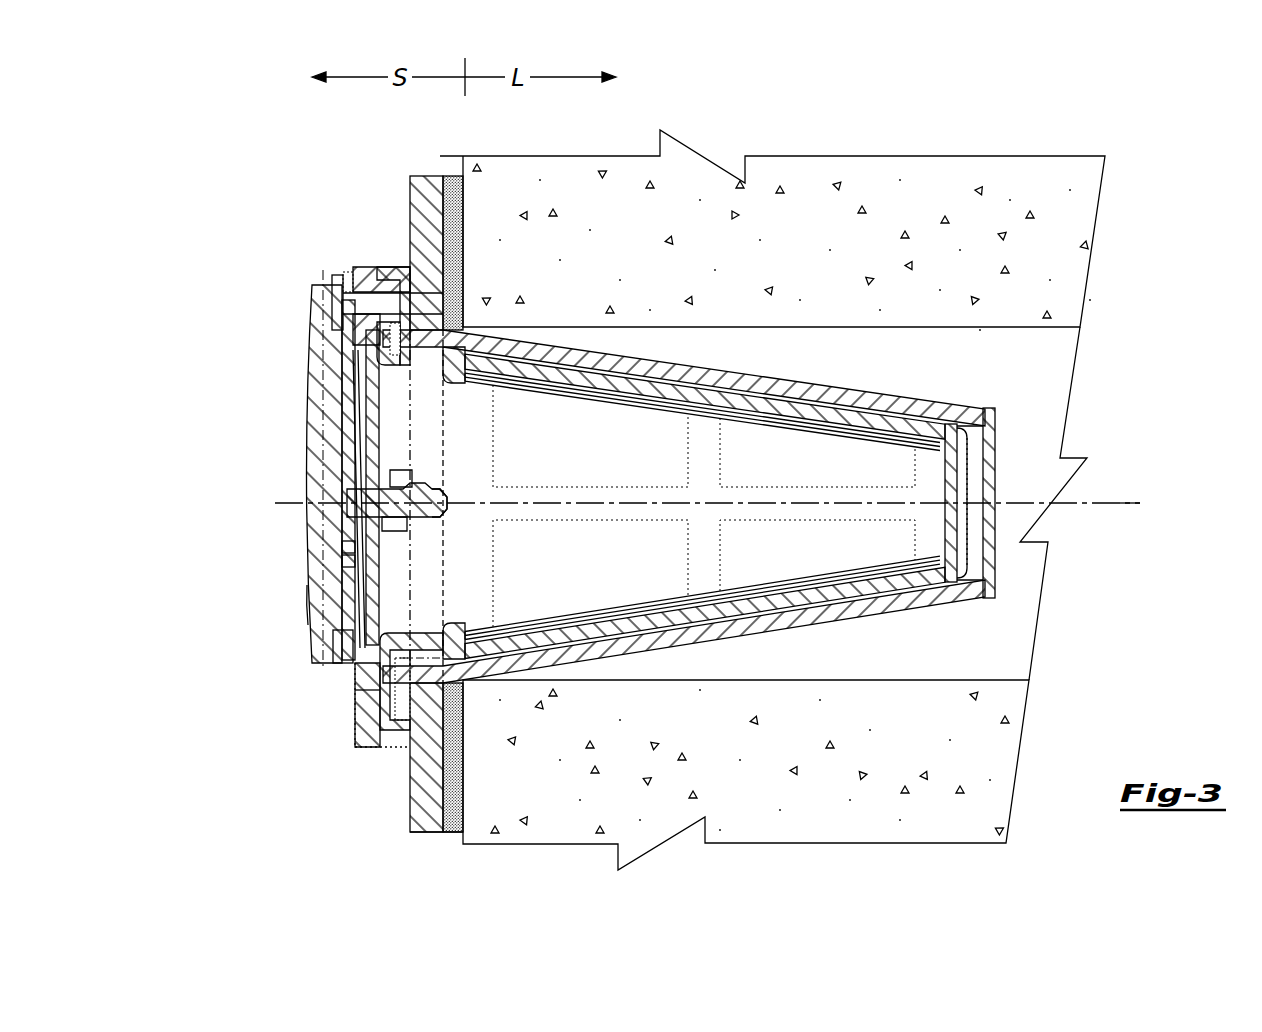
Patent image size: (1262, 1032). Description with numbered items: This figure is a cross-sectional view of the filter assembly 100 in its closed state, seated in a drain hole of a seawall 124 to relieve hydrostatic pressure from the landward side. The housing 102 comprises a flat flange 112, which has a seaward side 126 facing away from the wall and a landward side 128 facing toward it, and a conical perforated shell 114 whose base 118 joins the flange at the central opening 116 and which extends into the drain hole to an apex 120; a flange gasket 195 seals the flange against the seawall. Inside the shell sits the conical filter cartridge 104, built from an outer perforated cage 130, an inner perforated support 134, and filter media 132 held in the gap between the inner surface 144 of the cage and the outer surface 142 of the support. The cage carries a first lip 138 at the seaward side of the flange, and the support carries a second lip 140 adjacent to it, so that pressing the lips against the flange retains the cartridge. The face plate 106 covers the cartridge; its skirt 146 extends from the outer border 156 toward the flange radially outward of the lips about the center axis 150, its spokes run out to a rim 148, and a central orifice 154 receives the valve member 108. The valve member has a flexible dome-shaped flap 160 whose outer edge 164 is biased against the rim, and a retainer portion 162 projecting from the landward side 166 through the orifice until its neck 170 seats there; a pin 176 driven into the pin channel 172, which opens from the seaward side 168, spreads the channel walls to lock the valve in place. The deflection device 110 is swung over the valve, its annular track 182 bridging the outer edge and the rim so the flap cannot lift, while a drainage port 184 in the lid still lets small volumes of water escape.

The filter assembly 100 is at (236, 114).
The housing 102 is at (812, 625).
The filter cartridge 104 is at (940, 420).
The face plate 106 is at (352, 265).
The valve member 108 is at (307, 605).
The deflection device 110 is at (320, 350).
The flange 112 is at (427, 180).
The shell 114 is at (815, 384).
The opening 116 is at (405, 675).
The base 118 is at (425, 675).
The apex 120 is at (990, 573).
The seawall 124 is at (805, 175).
The seaward side 126 is at (413, 838).
The landward side 128 is at (453, 838).
The cage 130 is at (745, 395).
The filter media 132 is at (928, 585).
The support 134 is at (667, 602).
The first lip 138 is at (388, 362).
The second lip 140 is at (385, 722).
The outer surface 142 is at (650, 404).
The inner surface 144 is at (597, 392).
The skirt 146 is at (393, 265).
The rim 148 is at (353, 363).
The center axis 150 is at (1128, 500).
The orifice 154 is at (353, 558).
The outer border 156 is at (375, 700).
The flap 160 is at (345, 428).
The retainer portion 162 is at (410, 496).
The outer edge 164 is at (350, 648).
The landward side 166 is at (380, 560).
The seaward side 168 is at (348, 547).
The neck 170 is at (390, 480).
The pin channel 172 is at (385, 518).
The pin 176 is at (360, 490).
The track 182 is at (333, 290).
The drainage port 184 is at (355, 690).
The flange gasket 195 is at (468, 810).